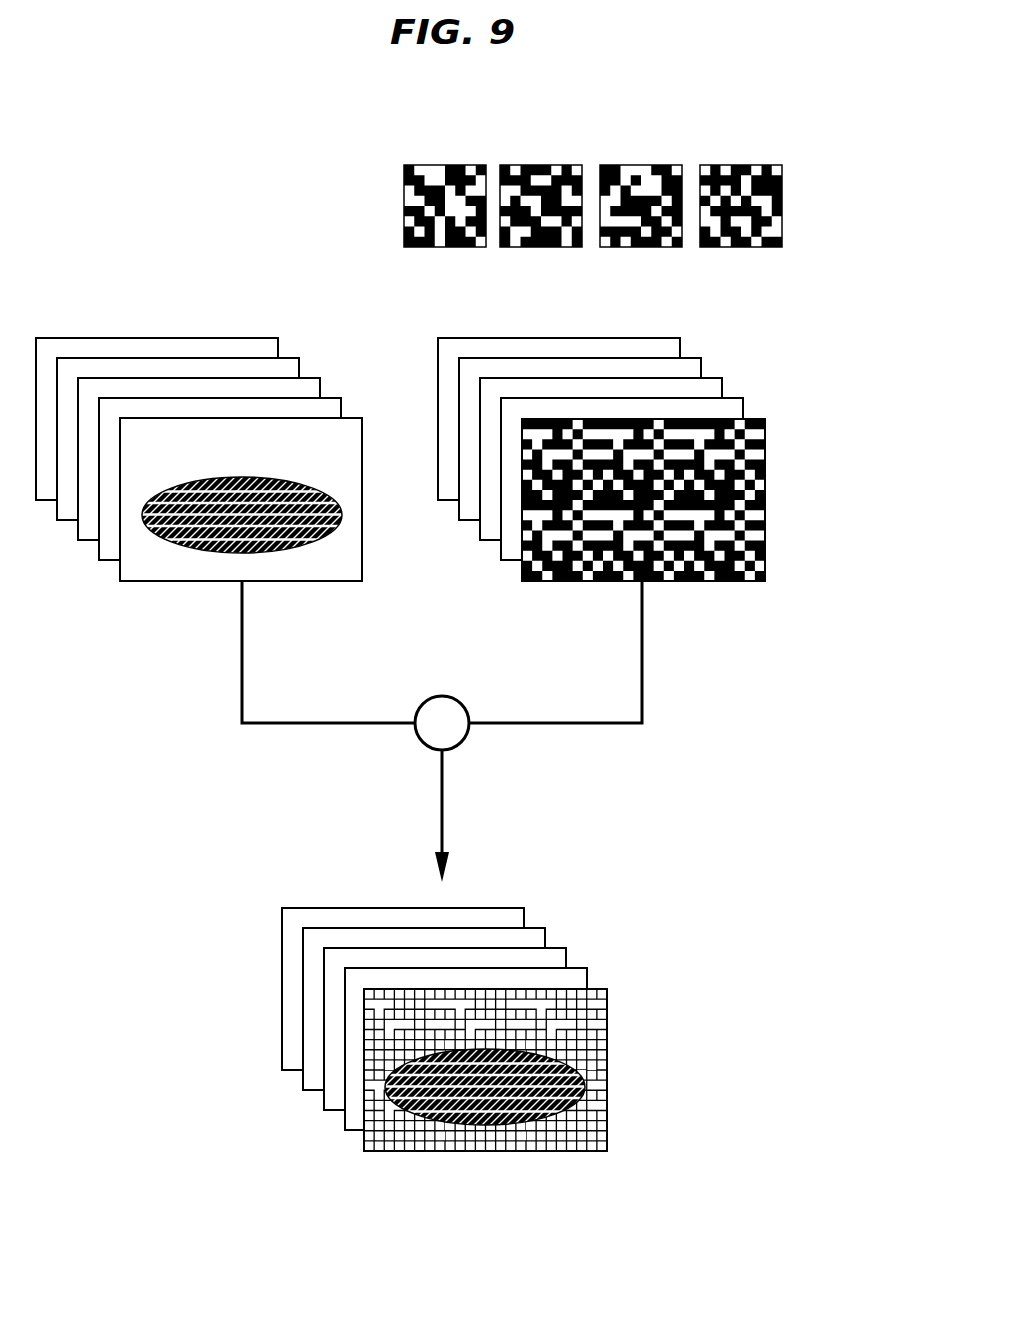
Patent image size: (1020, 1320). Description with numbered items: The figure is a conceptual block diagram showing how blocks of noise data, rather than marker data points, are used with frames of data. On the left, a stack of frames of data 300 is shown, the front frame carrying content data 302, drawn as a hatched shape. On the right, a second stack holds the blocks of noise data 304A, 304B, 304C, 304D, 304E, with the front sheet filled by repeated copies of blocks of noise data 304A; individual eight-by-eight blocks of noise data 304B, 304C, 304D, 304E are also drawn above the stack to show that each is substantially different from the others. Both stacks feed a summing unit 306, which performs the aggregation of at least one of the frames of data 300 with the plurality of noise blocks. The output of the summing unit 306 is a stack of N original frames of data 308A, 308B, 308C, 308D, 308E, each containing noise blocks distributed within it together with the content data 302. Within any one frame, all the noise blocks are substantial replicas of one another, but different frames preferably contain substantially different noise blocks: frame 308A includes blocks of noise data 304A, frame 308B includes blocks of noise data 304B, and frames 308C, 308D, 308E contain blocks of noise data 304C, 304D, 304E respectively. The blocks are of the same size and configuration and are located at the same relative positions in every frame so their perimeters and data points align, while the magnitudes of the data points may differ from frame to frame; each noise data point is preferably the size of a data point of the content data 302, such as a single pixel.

The frames of data 300 is at (59, 337).
The content data 302 is at (184, 556).
The blocks of noise data 304A is at (765, 420).
The blocks of noise data 304B is at (438, 164).
The blocks of noise data 304C is at (540, 164).
The blocks of noise data 304D is at (637, 164).
The blocks of noise data 304E is at (736, 164).
The summing unit 306 is at (433, 696).
The original frame of data 308A is at (607, 989).
The original frame of data 308B is at (586, 968).
The original frame of data 308C is at (565, 948).
The original frame of data 308D is at (544, 928).
The original frame of data 308E is at (523, 908).